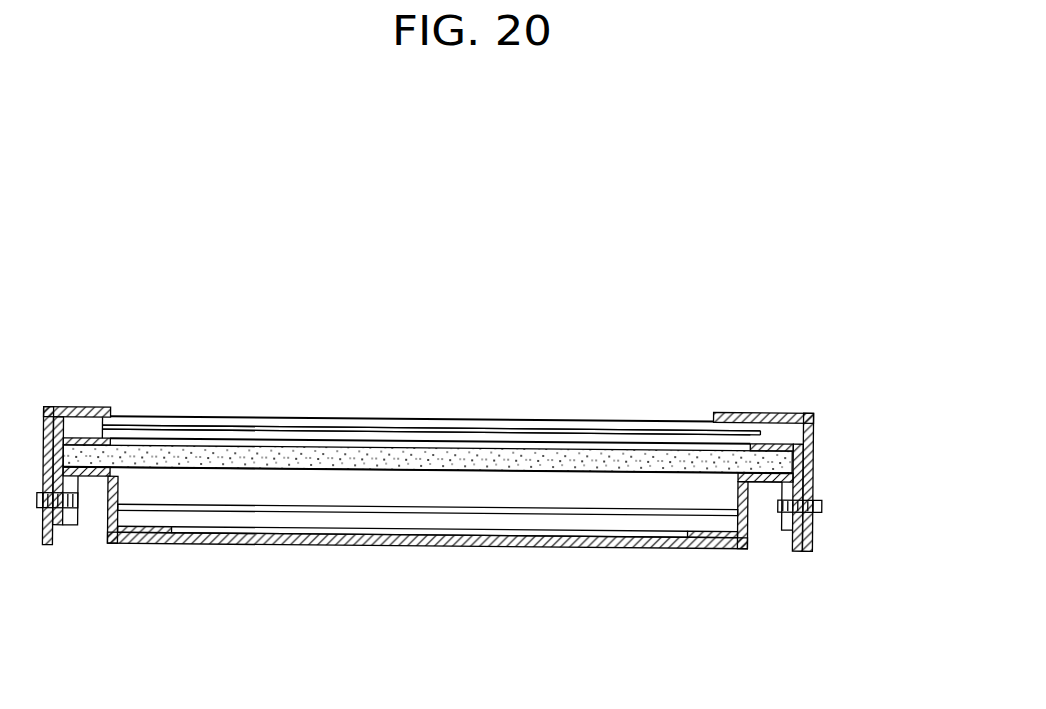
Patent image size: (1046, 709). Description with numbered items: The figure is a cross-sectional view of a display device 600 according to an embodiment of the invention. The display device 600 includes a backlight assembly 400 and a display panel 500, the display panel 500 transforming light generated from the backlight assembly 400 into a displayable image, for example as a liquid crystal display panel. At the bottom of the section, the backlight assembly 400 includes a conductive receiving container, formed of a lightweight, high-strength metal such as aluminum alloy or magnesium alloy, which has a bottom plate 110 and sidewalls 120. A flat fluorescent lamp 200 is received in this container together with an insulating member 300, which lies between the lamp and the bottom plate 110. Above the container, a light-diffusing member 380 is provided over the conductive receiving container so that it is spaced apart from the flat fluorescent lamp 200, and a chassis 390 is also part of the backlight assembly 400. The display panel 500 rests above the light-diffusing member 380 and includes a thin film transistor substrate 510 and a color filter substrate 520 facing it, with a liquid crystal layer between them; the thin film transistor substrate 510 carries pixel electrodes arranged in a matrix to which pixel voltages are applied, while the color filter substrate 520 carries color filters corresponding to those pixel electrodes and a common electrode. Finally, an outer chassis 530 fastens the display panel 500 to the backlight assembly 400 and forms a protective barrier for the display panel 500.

The display device 600 is at (247, 330).
The display panel 500 is at (405, 410).
The thin film transistor substrate 510 is at (609, 430).
The color filter substrate 520 is at (674, 436).
The chassis 530 is at (765, 411).
The chassis 390 is at (782, 450).
The light-diffusing member 380 is at (540, 462).
The backlight assembly 400 is at (505, 560).
The flat fluorescent lamp 200 is at (274, 515).
The insulating member 300 is at (133, 532).
The bottom plate 110 is at (697, 538).
The sidewalls 120 is at (752, 538).